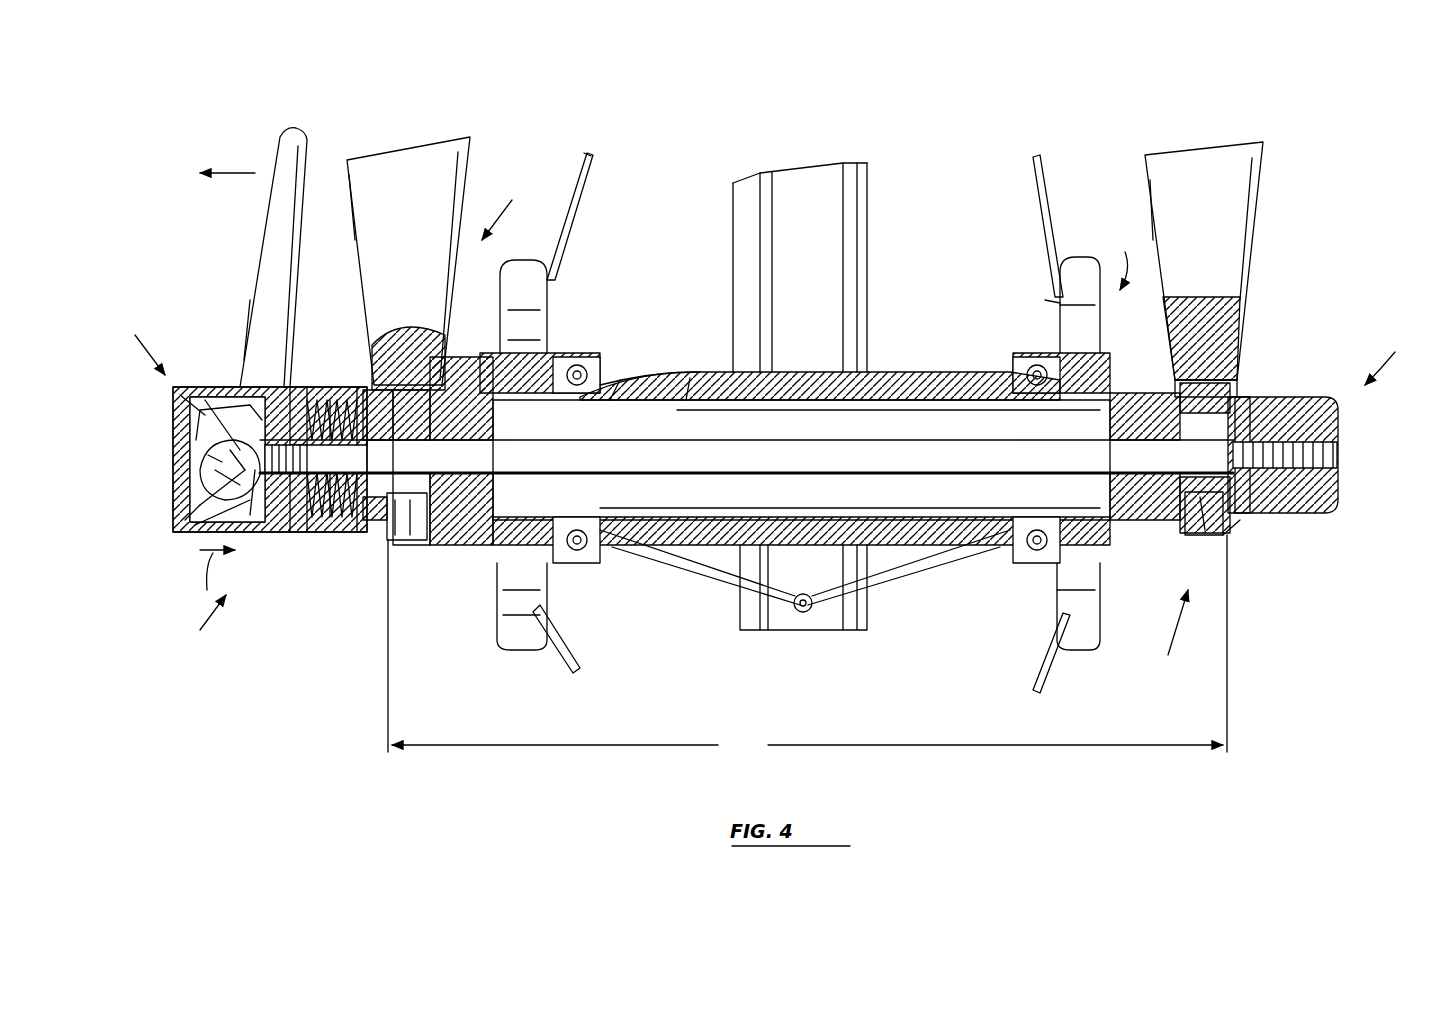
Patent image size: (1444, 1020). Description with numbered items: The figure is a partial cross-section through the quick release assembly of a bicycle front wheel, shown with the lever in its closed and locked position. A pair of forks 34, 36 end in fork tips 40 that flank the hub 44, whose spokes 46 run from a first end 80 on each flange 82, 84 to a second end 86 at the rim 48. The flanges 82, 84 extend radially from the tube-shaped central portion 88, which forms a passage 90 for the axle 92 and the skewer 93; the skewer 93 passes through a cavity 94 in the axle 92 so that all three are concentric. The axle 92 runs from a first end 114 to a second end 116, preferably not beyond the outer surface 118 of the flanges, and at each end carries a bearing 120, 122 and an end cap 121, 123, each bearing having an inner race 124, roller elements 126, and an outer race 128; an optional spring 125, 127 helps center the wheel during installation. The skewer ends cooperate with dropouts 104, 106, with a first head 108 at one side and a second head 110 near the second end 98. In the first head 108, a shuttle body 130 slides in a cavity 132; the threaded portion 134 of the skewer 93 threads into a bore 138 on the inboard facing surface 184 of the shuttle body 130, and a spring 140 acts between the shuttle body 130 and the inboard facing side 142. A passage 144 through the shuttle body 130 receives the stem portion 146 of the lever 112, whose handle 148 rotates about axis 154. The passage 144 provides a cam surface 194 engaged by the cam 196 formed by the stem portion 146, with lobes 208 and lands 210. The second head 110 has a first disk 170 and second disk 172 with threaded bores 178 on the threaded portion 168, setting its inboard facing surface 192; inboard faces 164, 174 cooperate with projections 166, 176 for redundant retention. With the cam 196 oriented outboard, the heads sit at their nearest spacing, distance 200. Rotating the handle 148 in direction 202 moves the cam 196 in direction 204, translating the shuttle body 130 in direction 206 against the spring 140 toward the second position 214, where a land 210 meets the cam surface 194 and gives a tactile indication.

The fork 34 is at (440, 148).
The fork 36 is at (1210, 160).
The fork tip 40 is at (370, 160).
The hub 44 is at (880, 368).
The spokes 46 is at (1028, 165).
The rim 48 is at (822, 277).
The first end 80 is at (1040, 228).
The flange 82 is at (545, 310).
The flange 84 is at (1078, 260).
The second end 86 is at (798, 615).
The central portion 88 is at (715, 372).
The passage 90 is at (655, 375).
The axle 92 is at (690, 380).
The skewer 93 is at (548, 474).
The cavity 94 is at (850, 474).
The second end 98 is at (1170, 633).
The dropout 104 is at (415, 540).
The dropout 106 is at (1200, 520).
The first head 108 is at (234, 420).
The second head 110 is at (1392, 357).
The lever 112 is at (265, 207).
The first end 114 is at (511, 208).
The second end 116 is at (1122, 259).
The outer surface 118 is at (500, 360).
The bearing 120 is at (590, 365).
The end cap 121 is at (470, 385).
The bearing 122 is at (1025, 365).
The end cap 123 is at (1128, 390).
The inner race 124 is at (660, 545).
The spring 125 is at (365, 390).
The roller elements 126 is at (577, 555).
The spring 127 is at (1230, 400).
The outer race 128 is at (600, 560).
The shuttle body 130 is at (180, 420).
The cavity 132 is at (195, 530).
The threaded portion 134 is at (310, 520).
The bore 138 is at (282, 500).
The spring 140 is at (360, 395).
The inboard facing side 142 is at (372, 530).
The passage 144 is at (176, 405).
The stem portion 146 is at (200, 455).
The handle 148 is at (283, 135).
The axis 154 is at (220, 385).
The inboard face 164 is at (402, 335).
The projection 166 is at (380, 560).
The threaded portion 168 is at (1338, 455).
The first disk 170 is at (1280, 395).
The second disk 172 is at (1330, 397).
The inboard face 174 is at (1235, 380).
The projection 176 is at (1225, 540).
The threaded bore 178 is at (1338, 447).
The inboard facing surface 184 is at (330, 530).
The inboard facing surface 192 is at (1240, 350).
The cam surface 194 is at (180, 523).
The cam 196 is at (205, 488).
The distance 200 is at (807, 646).
The direction 202 is at (232, 173).
The direction 204 is at (195, 525).
The direction 206 is at (180, 585).
The lobes 208 is at (200, 470).
The lands 210 is at (190, 500).
The second position 214 is at (199, 624).